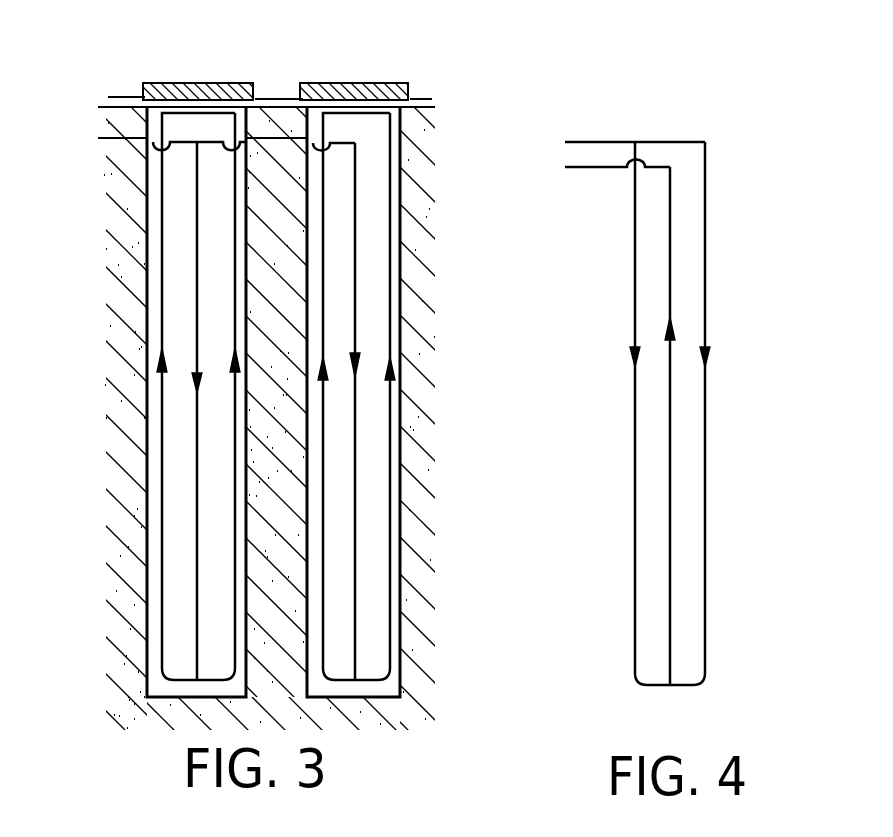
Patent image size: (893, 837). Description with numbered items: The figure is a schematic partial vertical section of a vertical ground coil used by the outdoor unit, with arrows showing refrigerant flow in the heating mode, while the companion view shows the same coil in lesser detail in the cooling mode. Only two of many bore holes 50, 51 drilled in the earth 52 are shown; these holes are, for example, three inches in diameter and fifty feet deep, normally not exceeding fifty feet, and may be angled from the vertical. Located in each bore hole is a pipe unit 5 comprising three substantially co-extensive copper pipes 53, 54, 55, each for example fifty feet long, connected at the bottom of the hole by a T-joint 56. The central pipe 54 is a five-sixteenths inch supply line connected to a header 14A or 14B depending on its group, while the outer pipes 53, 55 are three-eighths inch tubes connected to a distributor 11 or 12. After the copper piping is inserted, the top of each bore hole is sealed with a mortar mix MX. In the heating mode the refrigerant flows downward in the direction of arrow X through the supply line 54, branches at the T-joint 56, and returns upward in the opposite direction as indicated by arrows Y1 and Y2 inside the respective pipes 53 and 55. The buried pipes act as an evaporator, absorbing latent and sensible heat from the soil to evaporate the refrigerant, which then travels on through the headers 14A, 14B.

In FIG. 3, the pipe unit 5 is at (185, 498).
In FIG. 3, the distributor 11 is at (205, 107).
In FIG. 4, the distributor 11 is at (617, 142).
In FIG. 3, the distributor 12 is at (283, 67).
In FIG. 4, the distributor 12 is at (656, 377).
In FIG. 3, the header 14A is at (213, 143).
In FIG. 4, the header 14A is at (617, 167).
In FIG. 3, the header 14B is at (286, 75).
In FIG. 4, the header 14B is at (610, 426).
In FIG. 3, the bore hole 50 is at (157, 447).
In FIG. 3, the bore hole 51 is at (400, 418).
In FIG. 3, the earth 52 is at (435, 489).
In FIG. 3, the pipe 53 is at (162, 200).
In FIG. 3, the pipe 54 is at (197, 246).
In FIG. 3, the pipe 55 is at (235, 275).
In FIG. 3, the T-joint 56 is at (195, 680).
In FIG. 3, the mortar mix MX is at (378, 62).
In FIG. 3, the arrow X is at (195, 378).
In FIG. 3, the arrow Y1 is at (160, 348).
In FIG. 3, the arrow Y2 is at (235, 362).